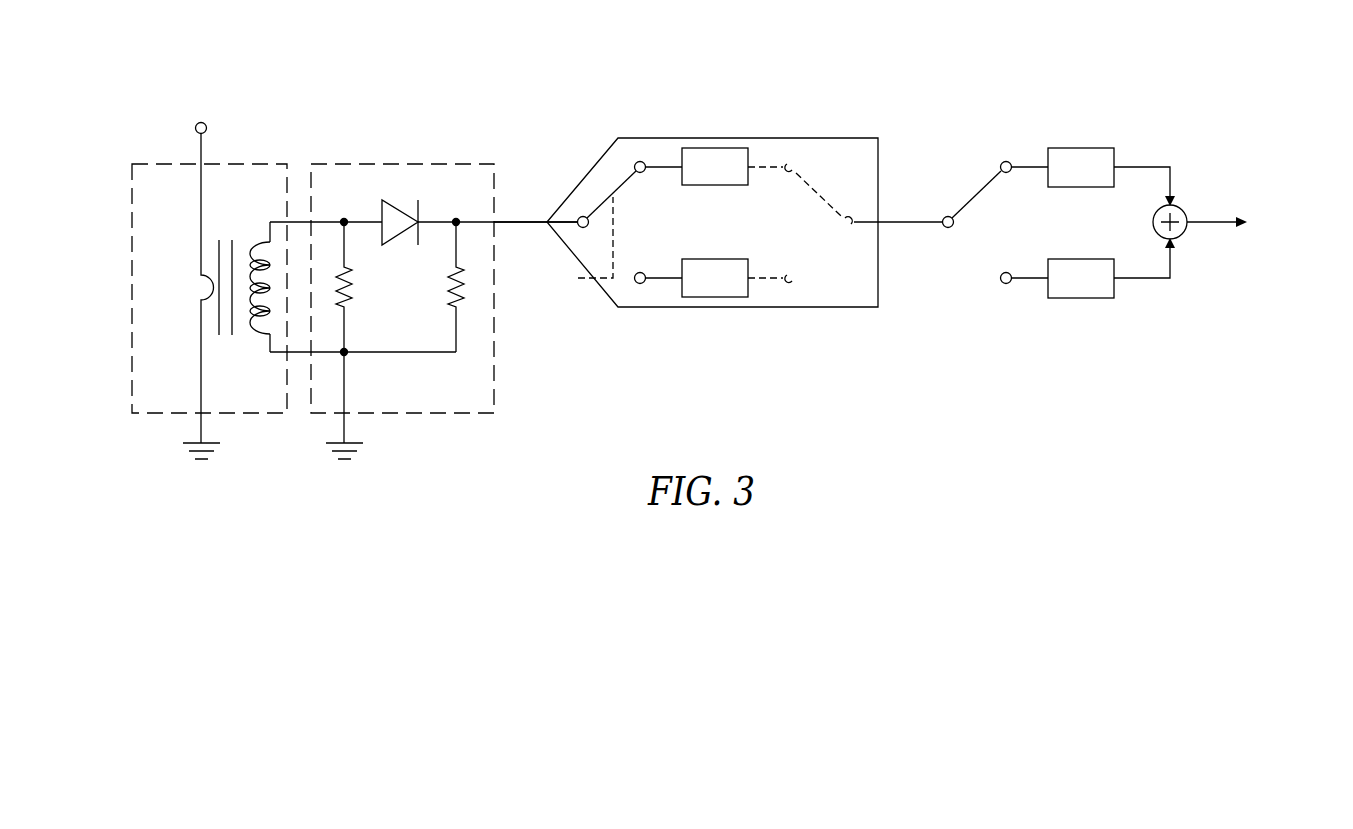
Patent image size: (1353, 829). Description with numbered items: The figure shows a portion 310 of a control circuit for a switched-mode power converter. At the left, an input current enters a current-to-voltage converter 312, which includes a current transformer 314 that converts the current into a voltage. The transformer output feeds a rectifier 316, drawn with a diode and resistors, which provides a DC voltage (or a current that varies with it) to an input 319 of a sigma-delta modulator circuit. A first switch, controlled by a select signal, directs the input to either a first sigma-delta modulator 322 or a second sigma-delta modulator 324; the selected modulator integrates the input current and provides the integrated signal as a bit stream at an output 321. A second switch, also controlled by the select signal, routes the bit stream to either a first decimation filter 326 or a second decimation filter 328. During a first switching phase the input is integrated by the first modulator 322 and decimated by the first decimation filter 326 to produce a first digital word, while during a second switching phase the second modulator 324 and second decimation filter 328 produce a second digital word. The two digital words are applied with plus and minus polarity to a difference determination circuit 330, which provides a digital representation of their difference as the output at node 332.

The portion of a control circuit 310 is at (191, 42).
The current-to-voltage converter 312 is at (175, 163).
The current transformer 314 is at (200, 288).
The rectifier 316 is at (405, 163).
The input 319 is at (522, 227).
The output 321 is at (909, 227).
The first sigma-delta modulator 322 is at (716, 186).
The second sigma-delta modulator 324 is at (716, 258).
The first decimation filter 326 is at (1082, 147).
The second decimation filter 328 is at (1082, 258).
The difference determination circuit 330 is at (1183, 238).
The node 332 is at (1208, 219).